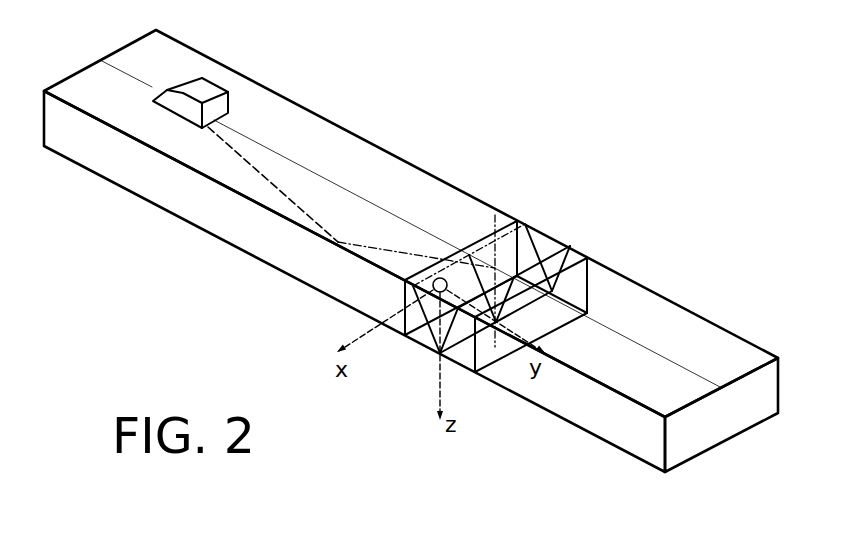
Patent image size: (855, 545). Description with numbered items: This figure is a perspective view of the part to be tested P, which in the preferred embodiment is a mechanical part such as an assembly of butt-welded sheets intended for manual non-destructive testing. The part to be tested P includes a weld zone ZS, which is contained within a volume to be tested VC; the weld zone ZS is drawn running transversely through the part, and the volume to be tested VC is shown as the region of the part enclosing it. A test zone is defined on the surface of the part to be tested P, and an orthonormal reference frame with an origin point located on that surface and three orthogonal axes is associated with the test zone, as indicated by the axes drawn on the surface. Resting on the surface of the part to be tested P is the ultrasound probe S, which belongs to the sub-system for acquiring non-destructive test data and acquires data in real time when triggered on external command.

The part to be tested P is at (750, 341).
The volume to be tested VC is at (582, 316).
The weld zone ZS is at (543, 240).
The ultrasound probe S is at (207, 89).